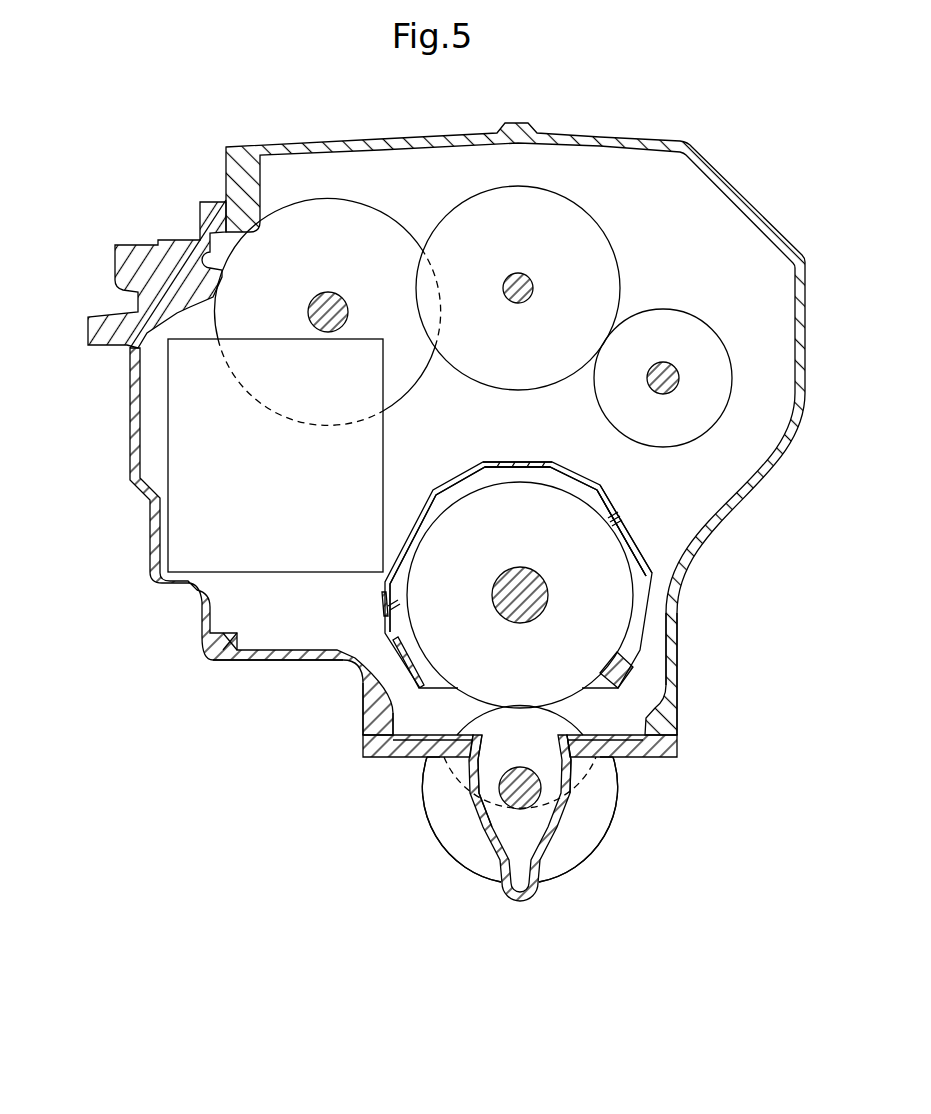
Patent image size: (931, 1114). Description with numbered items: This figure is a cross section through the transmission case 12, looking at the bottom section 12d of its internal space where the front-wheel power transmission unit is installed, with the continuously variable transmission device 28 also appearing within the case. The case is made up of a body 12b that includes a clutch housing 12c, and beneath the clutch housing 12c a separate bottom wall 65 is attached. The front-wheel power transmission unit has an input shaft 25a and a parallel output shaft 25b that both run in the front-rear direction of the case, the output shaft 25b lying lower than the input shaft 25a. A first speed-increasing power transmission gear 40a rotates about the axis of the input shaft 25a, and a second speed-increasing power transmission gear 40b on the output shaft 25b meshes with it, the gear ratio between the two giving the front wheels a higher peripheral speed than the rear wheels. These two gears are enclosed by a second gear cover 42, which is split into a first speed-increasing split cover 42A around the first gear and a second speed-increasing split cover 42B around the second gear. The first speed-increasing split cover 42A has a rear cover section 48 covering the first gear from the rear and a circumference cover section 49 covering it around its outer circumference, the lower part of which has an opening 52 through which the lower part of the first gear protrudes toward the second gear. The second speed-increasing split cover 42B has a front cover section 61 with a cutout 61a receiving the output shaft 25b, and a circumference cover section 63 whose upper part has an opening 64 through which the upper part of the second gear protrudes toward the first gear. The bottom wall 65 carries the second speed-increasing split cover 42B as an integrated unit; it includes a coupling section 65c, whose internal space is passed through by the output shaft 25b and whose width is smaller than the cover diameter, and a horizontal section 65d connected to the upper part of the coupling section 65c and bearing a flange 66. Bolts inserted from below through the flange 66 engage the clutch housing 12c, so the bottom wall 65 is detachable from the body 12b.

The transmission case 12 is at (224, 128).
The body 12b is at (518, 679).
The clutch housing 12c is at (370, 713).
The bottom section 12d is at (340, 608).
The continuously variable transmission device 28 is at (180, 432).
The first speed-increasing split cover 42A is at (480, 459).
The second gear cover 42 is at (529, 691).
The circumference cover section 49 is at (532, 460).
The rear cover section 48 is at (622, 537).
The first speed-increasing power transmission gear 40a is at (608, 598).
The input shaft 25a is at (522, 570).
The output shaft 25b is at (520, 767).
The second speed-increasing power transmission gear 40b is at (440, 853).
The opening 52 is at (446, 700).
The opening 64 is at (548, 738).
The front cover section 61 is at (580, 803).
The cutout 61a is at (481, 777).
The circumference cover section 63 is at (613, 790).
The coupling section 65c is at (487, 850).
The bottom wall 65 is at (519, 861).
The horizontal section 65d is at (437, 757).
The flange 66 is at (667, 745).
The second speed-increasing split cover 42B is at (578, 871).